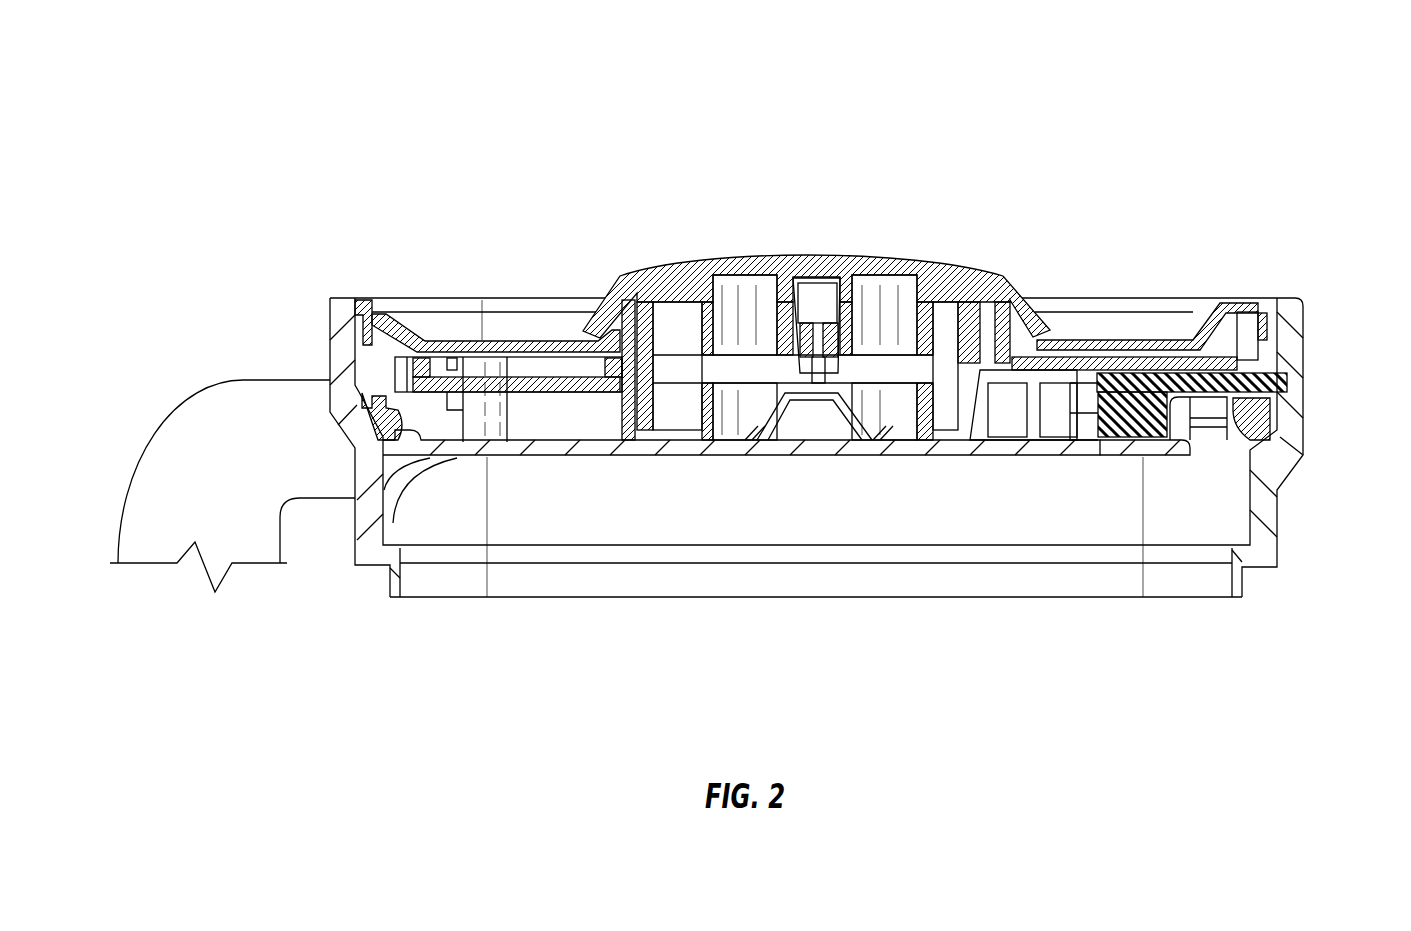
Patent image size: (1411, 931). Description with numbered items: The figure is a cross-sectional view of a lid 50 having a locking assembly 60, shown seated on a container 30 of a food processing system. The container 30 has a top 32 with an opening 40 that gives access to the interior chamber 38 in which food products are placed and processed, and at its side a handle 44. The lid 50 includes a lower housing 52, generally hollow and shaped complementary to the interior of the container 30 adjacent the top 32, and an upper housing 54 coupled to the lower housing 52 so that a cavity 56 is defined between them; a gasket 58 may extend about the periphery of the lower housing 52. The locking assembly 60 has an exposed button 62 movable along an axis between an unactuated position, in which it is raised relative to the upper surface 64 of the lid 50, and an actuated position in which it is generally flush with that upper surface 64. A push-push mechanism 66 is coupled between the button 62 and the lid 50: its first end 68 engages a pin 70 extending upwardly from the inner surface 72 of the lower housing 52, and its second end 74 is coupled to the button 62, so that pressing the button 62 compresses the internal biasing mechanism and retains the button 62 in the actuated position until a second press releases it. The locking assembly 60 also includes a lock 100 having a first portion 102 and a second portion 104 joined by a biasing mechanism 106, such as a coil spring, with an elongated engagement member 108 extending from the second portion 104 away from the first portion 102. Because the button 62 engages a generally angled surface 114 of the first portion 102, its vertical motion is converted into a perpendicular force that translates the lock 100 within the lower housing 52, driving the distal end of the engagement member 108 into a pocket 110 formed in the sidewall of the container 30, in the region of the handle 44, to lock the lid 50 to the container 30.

The container 30 is at (1312, 545).
The top 32 is at (1277, 332).
The interior chamber 38 is at (1268, 494).
The opening 40 is at (358, 312).
The handle 44 is at (152, 472).
The lid 50 is at (417, 146).
The lower housing 52 is at (522, 457).
The upper housing 54 is at (1222, 304).
The cavity 56 is at (551, 408).
The gasket 58 is at (382, 422).
The locking assembly 60 is at (1062, 270).
The button 62 is at (939, 283).
The upper surface 64 is at (480, 340).
The push-push mechanism 66 is at (781, 318).
The first end 68 is at (787, 368).
The pin 70 is at (817, 395).
The inner surface 72 is at (888, 428).
The second end 74 is at (836, 285).
The lock 100 is at (1092, 362).
The first portion 102 is at (1021, 405).
The second portion 104 is at (1157, 448).
The biasing mechanism 106 is at (1090, 432).
The engagement member 108 is at (1250, 358).
The pocket 110 is at (1285, 388).
The surface 114 is at (937, 440).